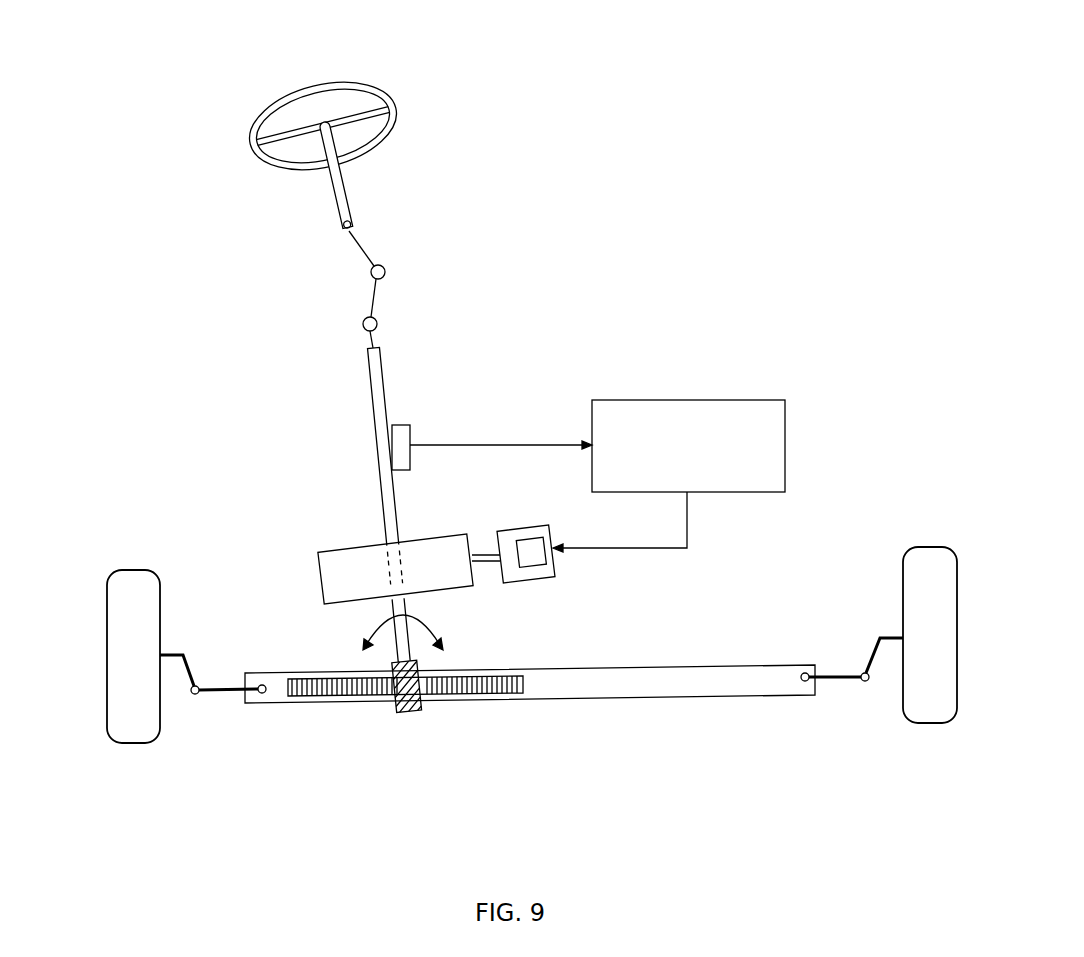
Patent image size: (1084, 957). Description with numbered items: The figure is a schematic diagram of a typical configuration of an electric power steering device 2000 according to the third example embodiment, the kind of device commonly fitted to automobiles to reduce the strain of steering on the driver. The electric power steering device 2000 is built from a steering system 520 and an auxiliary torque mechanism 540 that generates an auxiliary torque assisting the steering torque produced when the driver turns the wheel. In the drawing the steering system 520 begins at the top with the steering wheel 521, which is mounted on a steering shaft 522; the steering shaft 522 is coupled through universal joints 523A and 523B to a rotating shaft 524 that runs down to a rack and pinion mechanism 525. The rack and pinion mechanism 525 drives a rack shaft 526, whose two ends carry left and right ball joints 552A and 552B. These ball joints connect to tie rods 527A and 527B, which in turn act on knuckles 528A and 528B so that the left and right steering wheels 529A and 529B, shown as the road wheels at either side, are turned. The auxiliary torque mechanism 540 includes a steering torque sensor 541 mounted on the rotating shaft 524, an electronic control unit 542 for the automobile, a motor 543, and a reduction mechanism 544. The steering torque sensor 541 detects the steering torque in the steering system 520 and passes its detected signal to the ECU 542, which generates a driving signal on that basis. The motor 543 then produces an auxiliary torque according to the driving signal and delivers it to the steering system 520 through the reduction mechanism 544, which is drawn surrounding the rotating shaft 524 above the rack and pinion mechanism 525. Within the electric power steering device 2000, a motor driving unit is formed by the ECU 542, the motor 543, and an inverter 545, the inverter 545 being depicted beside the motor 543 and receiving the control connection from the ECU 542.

The electric power steering device 2000 is at (582, 86).
The steering system 520 is at (330, 348).
The steering wheel 521 is at (268, 104).
The steering shaft 522 is at (352, 190).
The universal joint 523A is at (385, 271).
The universal joint 523B is at (377, 322).
The rotating shaft 524 is at (386, 383).
The rack and pinion mechanism 525 is at (425, 728).
The rack shaft 526 is at (585, 700).
The tie rod 527A is at (210, 685).
The tie rod 527B is at (855, 673).
The knuckle 528A is at (173, 652).
The knuckle 528B is at (882, 633).
The steering wheel 529A is at (138, 725).
The steering wheel 529B is at (923, 712).
The auxiliary torque mechanism 540 is at (623, 361).
The steering torque sensor 541 is at (409, 426).
The electronic control unit 542 is at (746, 405).
The motor 543 is at (520, 527).
The reduction mechanism 544 is at (323, 548).
The inverter 545 is at (533, 562).
The ball joint 552A is at (257, 697).
The ball joint 552B is at (800, 687).